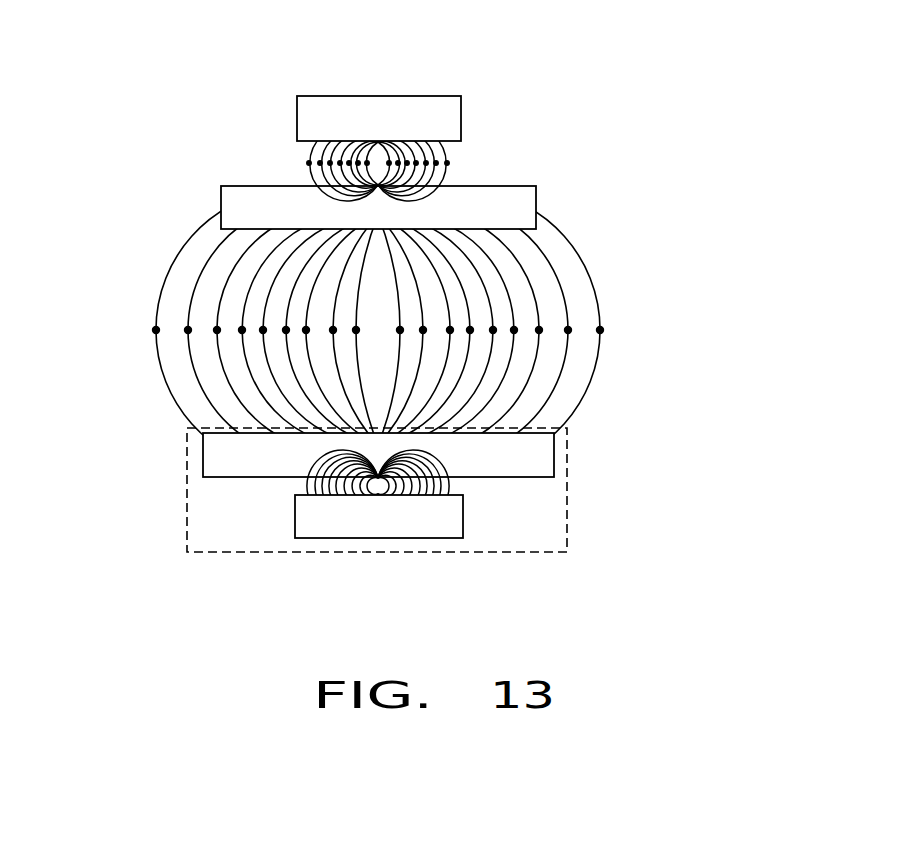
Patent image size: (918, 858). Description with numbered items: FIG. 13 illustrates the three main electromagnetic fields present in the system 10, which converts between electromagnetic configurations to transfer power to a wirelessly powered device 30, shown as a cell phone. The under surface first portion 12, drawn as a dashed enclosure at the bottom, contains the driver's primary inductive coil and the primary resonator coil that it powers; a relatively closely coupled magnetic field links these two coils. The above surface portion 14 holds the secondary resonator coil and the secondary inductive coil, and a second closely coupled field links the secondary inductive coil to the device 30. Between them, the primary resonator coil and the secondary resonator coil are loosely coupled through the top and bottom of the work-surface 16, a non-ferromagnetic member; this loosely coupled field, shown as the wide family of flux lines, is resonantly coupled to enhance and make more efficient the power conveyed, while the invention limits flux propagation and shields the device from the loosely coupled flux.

The system 10 is at (411, 292).
The under surface first portion 12 is at (567, 514).
The above surface portion 14 is at (570, 182).
The work-surface 16 is at (140, 255).
The wirelessly powered device 30 is at (415, 96).